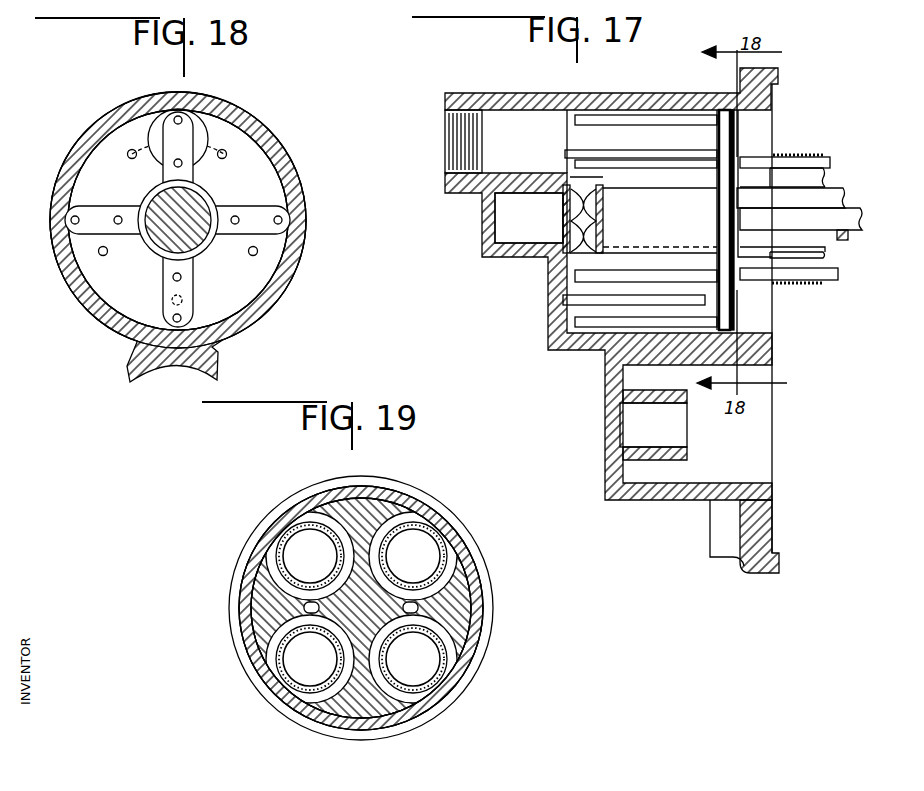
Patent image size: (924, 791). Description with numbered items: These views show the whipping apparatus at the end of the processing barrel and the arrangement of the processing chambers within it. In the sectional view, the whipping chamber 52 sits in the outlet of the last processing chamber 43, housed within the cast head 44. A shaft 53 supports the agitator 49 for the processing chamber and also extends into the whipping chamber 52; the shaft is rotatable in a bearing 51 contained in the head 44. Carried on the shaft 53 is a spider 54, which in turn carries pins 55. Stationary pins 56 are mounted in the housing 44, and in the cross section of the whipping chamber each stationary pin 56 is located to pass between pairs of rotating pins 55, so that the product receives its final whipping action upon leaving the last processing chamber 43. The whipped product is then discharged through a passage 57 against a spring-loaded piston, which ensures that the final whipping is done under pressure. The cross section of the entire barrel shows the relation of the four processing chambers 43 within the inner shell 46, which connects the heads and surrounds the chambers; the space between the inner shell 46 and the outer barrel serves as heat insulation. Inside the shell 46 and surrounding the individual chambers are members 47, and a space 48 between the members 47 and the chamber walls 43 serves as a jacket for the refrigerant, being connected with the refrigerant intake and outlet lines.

In FIG. 17, the processing chamber 43 is at (782, 213).
In FIG. 19, the processing chamber 43 is at (361, 607).
In FIG. 17, the cast head 44 is at (588, 97).
In FIG. 18, the cast head 44 is at (270, 131).
In FIG. 19, the inner shell 46 is at (466, 526).
In FIG. 19, the member 47 is at (357, 617).
In FIG. 19, the space 48 is at (405, 520).
In FIG. 17, the agitator 49 is at (756, 158).
In FIG. 17, the bearing 51 is at (525, 244).
In FIG. 17, the whipping chamber 52 is at (642, 220).
In FIG. 17, the shaft 53 is at (707, 220).
In FIG. 18, the shaft 53 is at (163, 238).
In FIG. 17, the spider 54 is at (724, 152).
In FIG. 18, the spider 54 is at (103, 206).
In FIG. 17, the pin 55 is at (634, 122).
In FIG. 18, the pin 55 is at (183, 164).
In FIG. 17, the stationary pin 56 is at (596, 156).
In FIG. 18, the stationary pin 56 is at (128, 154).
In FIG. 17, the passage 57 is at (495, 137).
In FIG. 18, the passage 57 is at (197, 138).